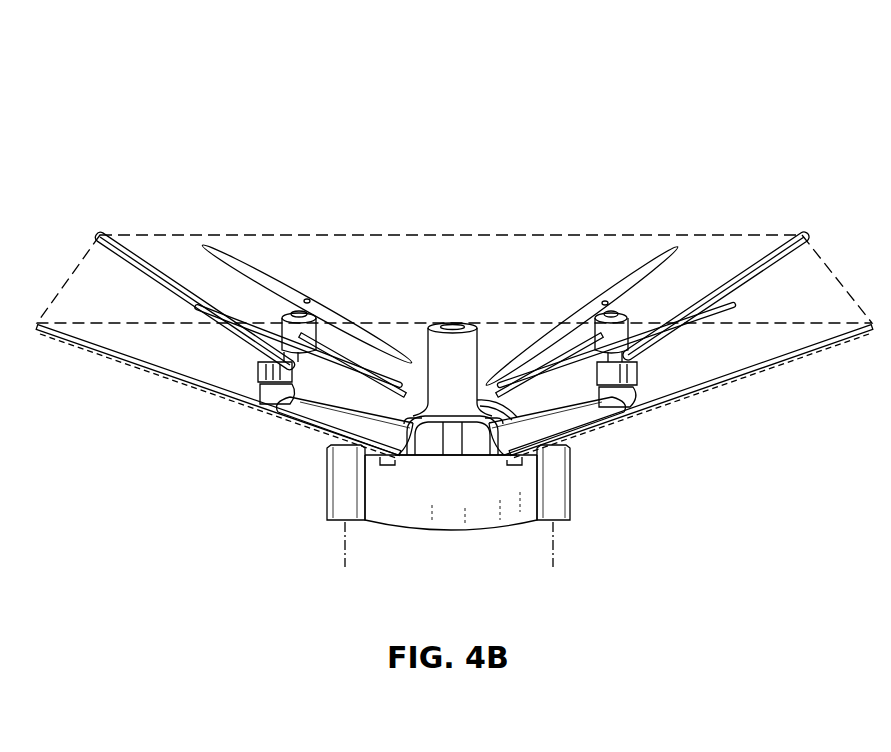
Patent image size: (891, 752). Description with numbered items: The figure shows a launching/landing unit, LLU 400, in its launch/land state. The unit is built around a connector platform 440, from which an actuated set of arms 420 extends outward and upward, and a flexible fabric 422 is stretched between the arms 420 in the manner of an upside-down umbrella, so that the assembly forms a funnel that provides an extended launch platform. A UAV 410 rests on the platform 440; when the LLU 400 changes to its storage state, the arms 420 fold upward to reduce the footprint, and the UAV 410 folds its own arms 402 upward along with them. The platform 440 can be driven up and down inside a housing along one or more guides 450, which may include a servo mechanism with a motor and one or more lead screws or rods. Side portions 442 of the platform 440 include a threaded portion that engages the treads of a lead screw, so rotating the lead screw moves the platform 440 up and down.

The LLU 400 is at (133, 80).
The arms 402 is at (327, 417).
The UAV 410 is at (445, 312).
The arms 420 is at (115, 245).
The flexible fabric 422 is at (505, 243).
The connector platform 440 is at (413, 520).
The side portions 442 is at (563, 512).
The guides 450 is at (345, 560).